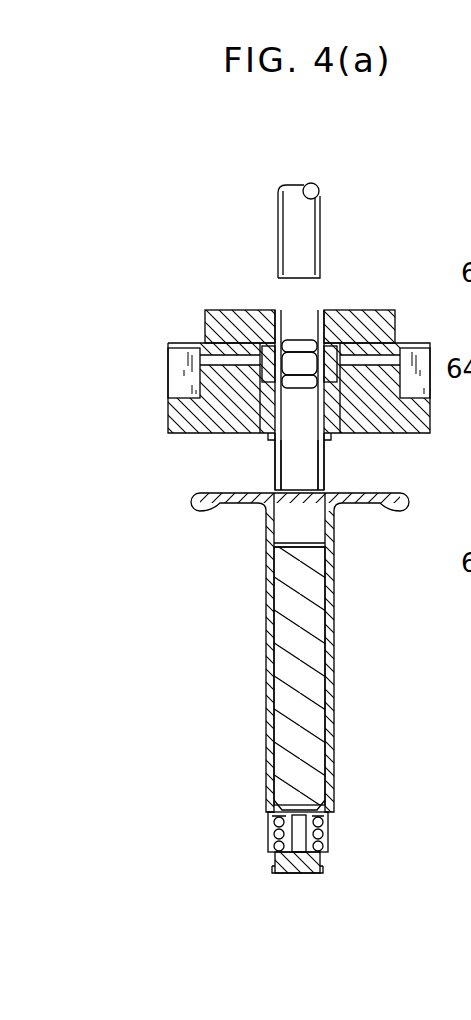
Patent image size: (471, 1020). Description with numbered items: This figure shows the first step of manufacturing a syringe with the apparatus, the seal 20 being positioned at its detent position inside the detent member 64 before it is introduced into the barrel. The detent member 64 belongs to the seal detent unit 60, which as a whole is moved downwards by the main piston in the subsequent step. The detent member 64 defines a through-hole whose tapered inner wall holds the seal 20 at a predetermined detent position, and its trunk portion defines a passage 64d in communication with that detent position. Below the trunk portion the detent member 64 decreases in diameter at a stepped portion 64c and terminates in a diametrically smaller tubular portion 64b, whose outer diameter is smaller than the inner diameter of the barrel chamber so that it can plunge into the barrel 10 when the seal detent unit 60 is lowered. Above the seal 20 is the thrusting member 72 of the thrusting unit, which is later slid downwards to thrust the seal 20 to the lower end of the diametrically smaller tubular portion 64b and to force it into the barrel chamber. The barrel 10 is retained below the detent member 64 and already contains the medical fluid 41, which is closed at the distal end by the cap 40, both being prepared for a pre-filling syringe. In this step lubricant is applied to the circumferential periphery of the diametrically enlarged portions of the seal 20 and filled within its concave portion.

The seal detent unit 60 is at (138, 329).
The detent member 64 is at (215, 311).
The passage 64d is at (180, 379).
The diametrically smaller tubular portion 64b is at (272, 458).
The stepped portion 64c is at (386, 435).
The seal 20 is at (300, 355).
The thrusting member 72 is at (292, 250).
The barrel 10 is at (265, 645).
The medical fluid 41 is at (306, 700).
The cap 40 is at (320, 855).